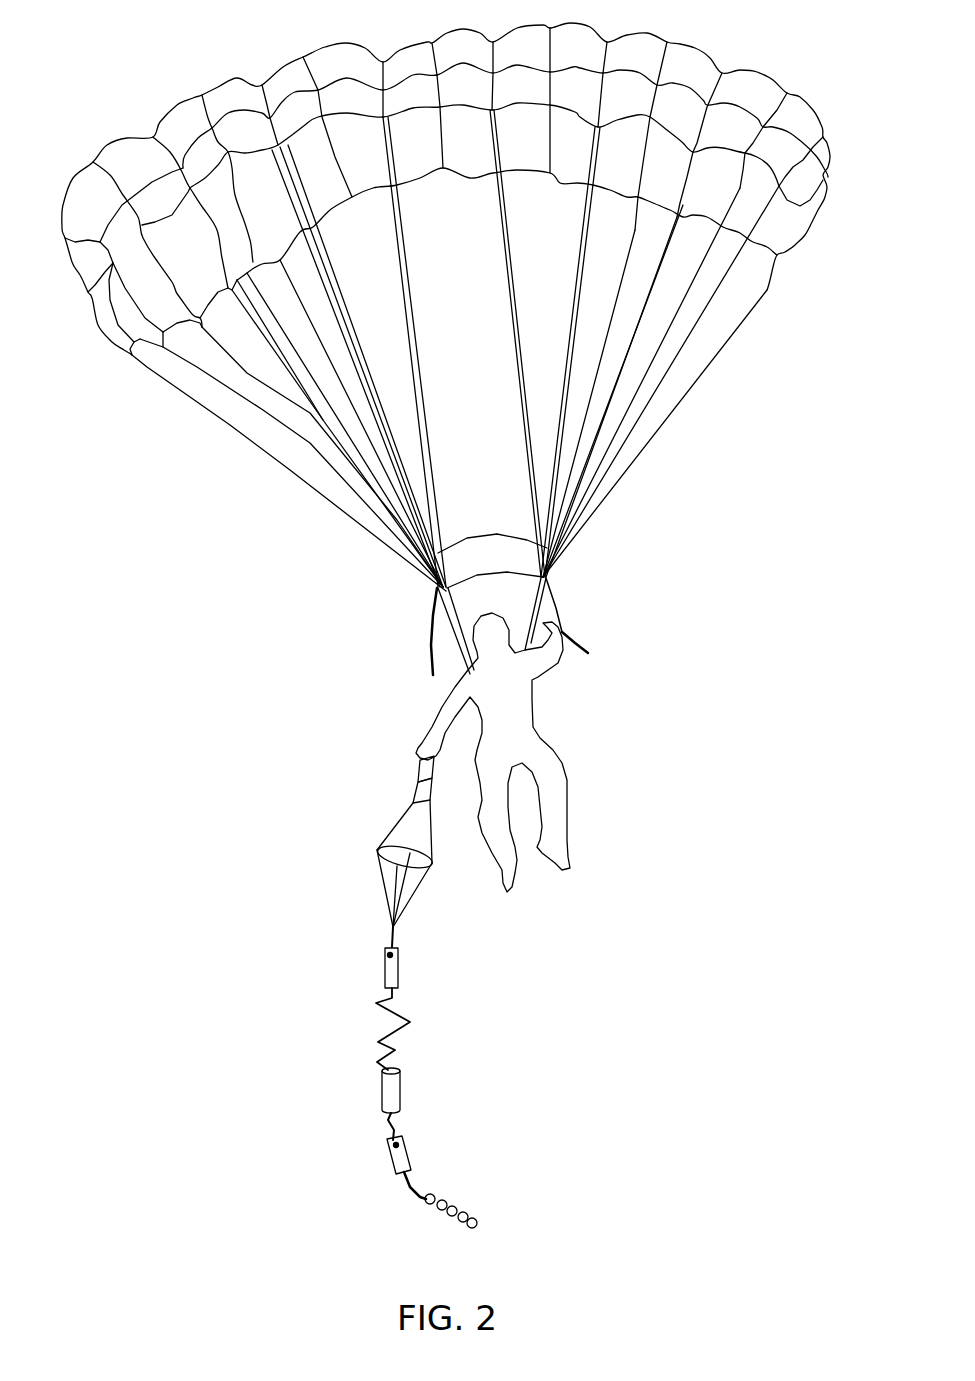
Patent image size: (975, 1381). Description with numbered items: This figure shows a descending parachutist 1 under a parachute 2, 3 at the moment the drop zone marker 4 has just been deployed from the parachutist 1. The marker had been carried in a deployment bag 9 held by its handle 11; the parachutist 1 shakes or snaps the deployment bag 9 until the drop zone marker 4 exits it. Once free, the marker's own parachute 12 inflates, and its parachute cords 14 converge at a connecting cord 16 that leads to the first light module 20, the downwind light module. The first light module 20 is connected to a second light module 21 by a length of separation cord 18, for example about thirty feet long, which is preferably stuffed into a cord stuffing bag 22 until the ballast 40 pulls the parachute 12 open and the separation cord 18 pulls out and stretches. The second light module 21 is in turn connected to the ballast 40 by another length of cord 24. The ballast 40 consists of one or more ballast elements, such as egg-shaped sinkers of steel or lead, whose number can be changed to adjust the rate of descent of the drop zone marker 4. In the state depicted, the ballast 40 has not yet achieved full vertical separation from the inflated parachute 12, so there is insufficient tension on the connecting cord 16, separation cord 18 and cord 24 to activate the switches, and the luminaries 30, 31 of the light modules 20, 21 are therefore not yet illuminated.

The parachutist 1 is at (525, 710).
The parachute 2 is at (697, 65).
The parachute 3 is at (250, 443).
The drop zone marker 4 is at (297, 880).
The deployment bag 9 is at (413, 792).
The handle 11 is at (418, 757).
The parachute 12 is at (397, 823).
The parachute cords 14 is at (380, 893).
The connecting cord 16 is at (396, 937).
The separation cord 18 is at (395, 1040).
The first light module 20 is at (400, 982).
The second light module 21 is at (408, 1152).
The cord stuffing bag 22 is at (400, 1092).
The cord 24 is at (410, 1187).
The luminary 30 is at (385, 954).
The luminary 31 is at (392, 1145).
The ballast 40 is at (458, 1200).